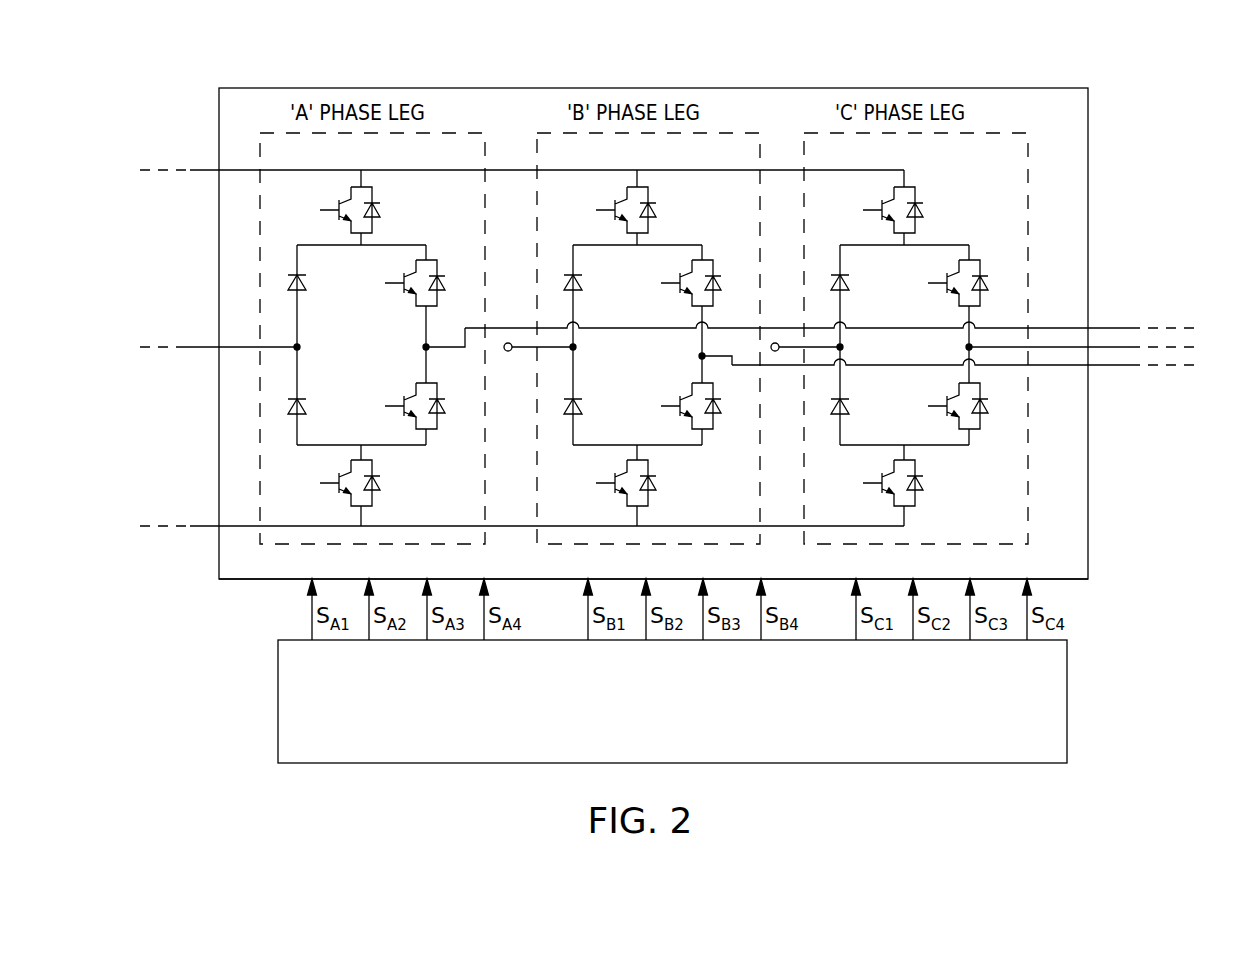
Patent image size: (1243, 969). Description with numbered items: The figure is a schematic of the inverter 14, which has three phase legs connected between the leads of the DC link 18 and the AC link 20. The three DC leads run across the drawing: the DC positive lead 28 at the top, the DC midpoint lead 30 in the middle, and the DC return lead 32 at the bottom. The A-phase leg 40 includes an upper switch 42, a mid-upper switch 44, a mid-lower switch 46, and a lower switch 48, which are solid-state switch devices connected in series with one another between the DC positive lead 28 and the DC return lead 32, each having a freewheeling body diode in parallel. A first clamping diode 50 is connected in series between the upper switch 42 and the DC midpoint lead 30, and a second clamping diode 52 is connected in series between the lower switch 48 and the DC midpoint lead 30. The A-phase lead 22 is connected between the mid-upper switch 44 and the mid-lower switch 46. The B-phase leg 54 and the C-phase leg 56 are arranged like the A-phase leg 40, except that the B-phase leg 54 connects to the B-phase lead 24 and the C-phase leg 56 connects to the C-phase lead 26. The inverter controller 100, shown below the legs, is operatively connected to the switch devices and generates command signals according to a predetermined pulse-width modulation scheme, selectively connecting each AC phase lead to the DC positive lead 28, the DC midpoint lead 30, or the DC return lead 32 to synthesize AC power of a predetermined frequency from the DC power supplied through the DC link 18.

The inverter 14 is at (257, 579).
The DC link 18 is at (165, 115).
The AC link 20 is at (1180, 220).
The A-phase lead 22 is at (1103, 328).
The B-phase lead 24 is at (1120, 347).
The C-phase lead 26 is at (1103, 365).
The DC positive lead 28 is at (237, 170).
The DC midpoint lead 30 is at (235, 347).
The DC return lead 32 is at (237, 526).
The A-phase leg 40 is at (448, 132).
The upper switch 42 is at (350, 218).
The mid-upper switch 44 is at (405, 287).
The mid-lower switch 46 is at (418, 397).
The lower switch 48 is at (358, 467).
The first clamping diode 50 is at (307, 280).
The second clamping diode 52 is at (307, 407).
The B-phase leg 54 is at (723, 132).
The C-phase leg 56 is at (990, 132).
The inverter controller 100 is at (604, 710).